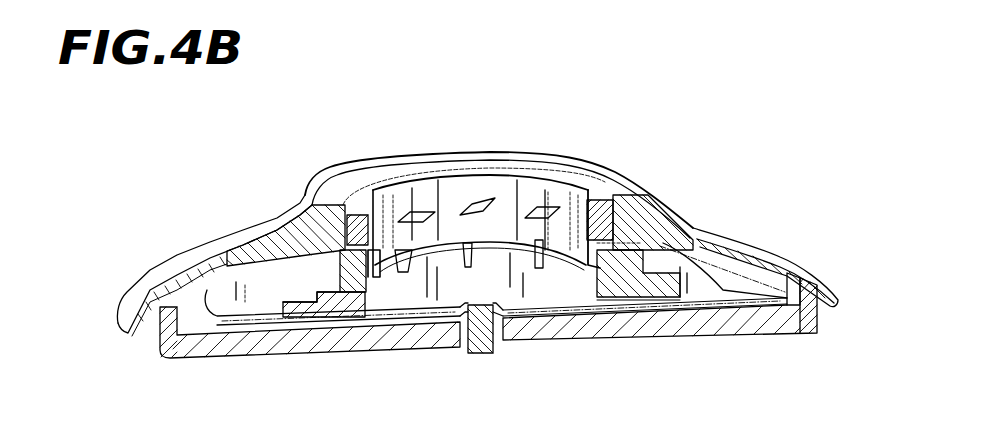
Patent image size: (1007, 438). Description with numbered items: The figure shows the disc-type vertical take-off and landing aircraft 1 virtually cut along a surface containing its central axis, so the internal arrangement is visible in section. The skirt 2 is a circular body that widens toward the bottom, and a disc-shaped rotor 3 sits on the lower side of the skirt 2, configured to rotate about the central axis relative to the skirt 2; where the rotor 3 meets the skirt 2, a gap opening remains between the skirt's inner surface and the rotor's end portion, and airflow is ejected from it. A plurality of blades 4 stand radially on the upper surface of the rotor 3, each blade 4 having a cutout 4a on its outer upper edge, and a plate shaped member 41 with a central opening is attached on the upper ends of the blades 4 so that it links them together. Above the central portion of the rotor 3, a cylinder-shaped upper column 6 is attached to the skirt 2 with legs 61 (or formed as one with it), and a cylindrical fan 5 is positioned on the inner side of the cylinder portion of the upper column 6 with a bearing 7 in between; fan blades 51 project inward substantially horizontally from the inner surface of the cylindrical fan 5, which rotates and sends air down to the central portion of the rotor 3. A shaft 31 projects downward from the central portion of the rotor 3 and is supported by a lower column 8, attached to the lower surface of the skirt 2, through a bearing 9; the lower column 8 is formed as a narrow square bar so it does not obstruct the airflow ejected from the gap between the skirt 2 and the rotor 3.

The disc-type vertical take-off and landing aircraft 1 is at (688, 185).
The skirt 2 is at (162, 277).
The rotor 3 is at (247, 322).
The shaft 31 is at (480, 353).
The blade 4 is at (347, 318).
The cutout 4a is at (293, 283).
The plate shaped member 41 is at (623, 260).
The cylindrical fan 5 is at (462, 190).
The fan blade 51 is at (545, 210).
The upper column 6 is at (322, 195).
The leg 61 is at (300, 237).
The bearing 7 is at (362, 217).
The lower column 8 is at (307, 326).
The bearing 9 is at (500, 343).